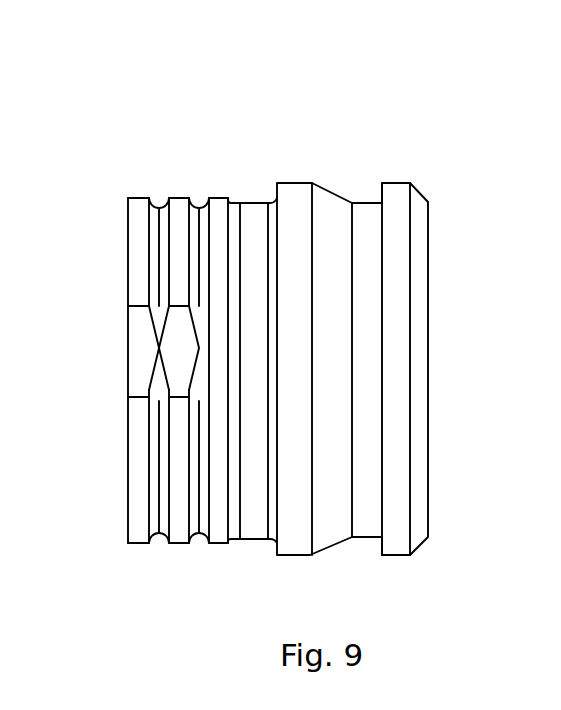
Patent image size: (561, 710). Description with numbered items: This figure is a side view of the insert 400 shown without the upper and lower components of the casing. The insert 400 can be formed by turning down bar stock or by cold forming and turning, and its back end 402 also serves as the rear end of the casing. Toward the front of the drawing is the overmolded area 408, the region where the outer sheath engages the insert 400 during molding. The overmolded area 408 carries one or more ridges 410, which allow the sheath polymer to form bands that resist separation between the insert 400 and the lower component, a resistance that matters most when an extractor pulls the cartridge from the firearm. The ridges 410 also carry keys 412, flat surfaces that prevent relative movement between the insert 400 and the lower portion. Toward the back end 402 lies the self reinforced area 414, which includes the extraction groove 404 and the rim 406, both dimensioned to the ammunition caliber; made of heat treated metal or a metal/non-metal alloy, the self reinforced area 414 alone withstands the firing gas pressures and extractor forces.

The insert 400 is at (266, 104).
The back end 402 is at (428, 117).
The extraction groove 404 is at (367, 218).
The rim 406 is at (402, 422).
The overmolded area 408 is at (128, 560).
The ridges 410 is at (139, 207).
The keys 412 is at (175, 358).
The self reinforced area 414 is at (278, 560).